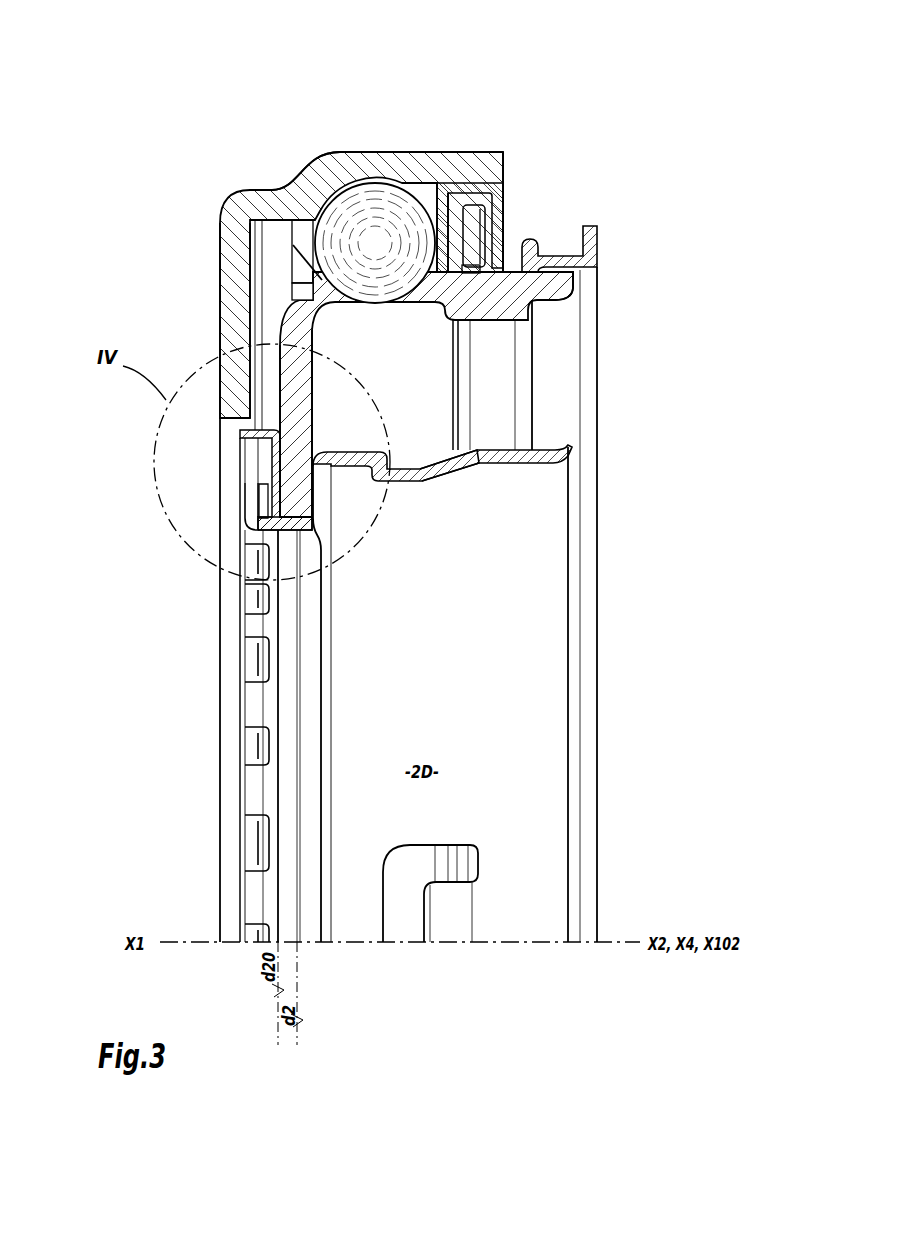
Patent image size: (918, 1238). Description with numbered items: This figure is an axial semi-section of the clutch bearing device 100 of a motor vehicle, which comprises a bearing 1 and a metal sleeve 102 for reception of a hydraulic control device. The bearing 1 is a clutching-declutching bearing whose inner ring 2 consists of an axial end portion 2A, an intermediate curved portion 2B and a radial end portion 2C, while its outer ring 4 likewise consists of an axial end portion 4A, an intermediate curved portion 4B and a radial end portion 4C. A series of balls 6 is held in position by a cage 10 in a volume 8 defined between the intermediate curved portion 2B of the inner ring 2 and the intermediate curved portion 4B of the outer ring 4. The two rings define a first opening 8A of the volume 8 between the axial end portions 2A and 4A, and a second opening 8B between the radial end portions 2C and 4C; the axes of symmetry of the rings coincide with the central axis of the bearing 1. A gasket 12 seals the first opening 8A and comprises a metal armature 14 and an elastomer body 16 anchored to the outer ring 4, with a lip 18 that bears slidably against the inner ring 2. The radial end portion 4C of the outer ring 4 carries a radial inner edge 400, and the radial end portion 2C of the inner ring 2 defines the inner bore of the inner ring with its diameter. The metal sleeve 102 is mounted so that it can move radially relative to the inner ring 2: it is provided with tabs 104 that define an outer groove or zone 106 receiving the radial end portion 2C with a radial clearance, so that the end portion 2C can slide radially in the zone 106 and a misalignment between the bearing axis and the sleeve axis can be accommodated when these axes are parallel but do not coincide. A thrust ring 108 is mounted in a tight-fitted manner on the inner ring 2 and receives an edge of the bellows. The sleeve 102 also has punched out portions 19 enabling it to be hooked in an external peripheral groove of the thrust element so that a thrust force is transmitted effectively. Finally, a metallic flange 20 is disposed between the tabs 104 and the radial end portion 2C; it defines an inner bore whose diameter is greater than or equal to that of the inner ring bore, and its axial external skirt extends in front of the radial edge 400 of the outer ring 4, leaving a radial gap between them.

The bearing 1 is at (210, 140).
The inner ring 2 is at (686, 288).
The axial end portion 2A is at (507, 292).
The intermediate curved portion 2B is at (398, 312).
The radial end portion 2C is at (297, 397).
The outer ring 4 is at (270, 186).
The axial end portion 4A is at (495, 163).
The intermediate curved portion 4B is at (335, 180).
The radial end portion 4C is at (232, 284).
The balls 6 is at (375, 243).
The volume 8 is at (289, 234).
The first opening 8A is at (458, 240).
The second opening 8B is at (264, 355).
The cage 10 is at (308, 268).
The gasket 12 is at (568, 207).
The metal armature 14 is at (477, 199).
The elastomer body 16 is at (505, 188).
The lip 18 is at (472, 266).
The punched out portions 19 is at (432, 478).
The metallic flange 20 is at (275, 470).
The clutch bearing device 100 is at (626, 664).
The metal sleeve 102 is at (560, 462).
The tabs 104 is at (250, 777).
The outer groove or zone 106 is at (308, 535).
The thrust ring 108 is at (572, 247).
The radial inner edge 400 is at (232, 421).